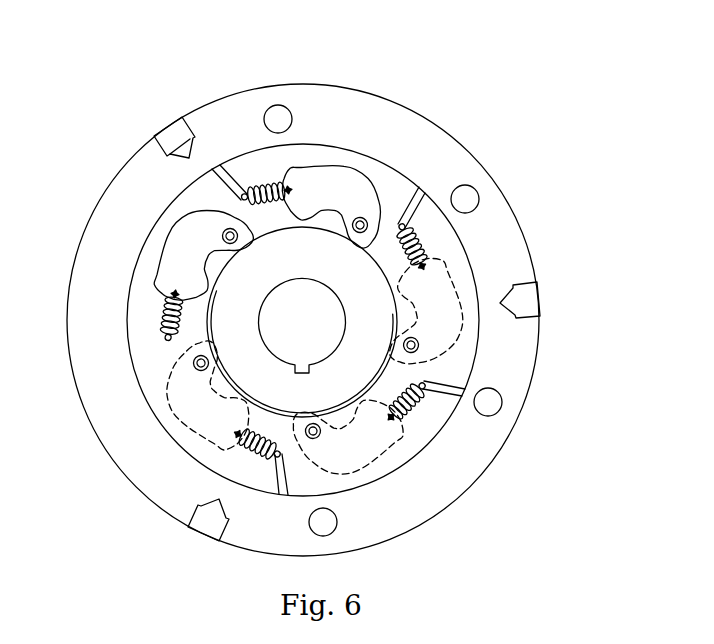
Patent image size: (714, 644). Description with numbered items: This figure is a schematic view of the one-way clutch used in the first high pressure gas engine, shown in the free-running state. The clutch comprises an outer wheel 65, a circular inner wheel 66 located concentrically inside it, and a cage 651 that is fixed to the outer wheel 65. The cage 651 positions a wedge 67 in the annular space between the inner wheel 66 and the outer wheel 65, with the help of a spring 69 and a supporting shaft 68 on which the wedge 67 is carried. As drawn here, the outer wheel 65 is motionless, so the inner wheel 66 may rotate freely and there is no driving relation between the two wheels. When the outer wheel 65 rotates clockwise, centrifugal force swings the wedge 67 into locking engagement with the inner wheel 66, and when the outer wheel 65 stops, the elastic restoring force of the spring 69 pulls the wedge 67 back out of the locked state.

The outer wheel 65 is at (500, 222).
The inner wheel 66 is at (365, 300).
The cage 651 is at (402, 198).
The wedge 67 is at (317, 170).
The supporting shaft 68 is at (417, 340).
The spring 69 is at (260, 196).